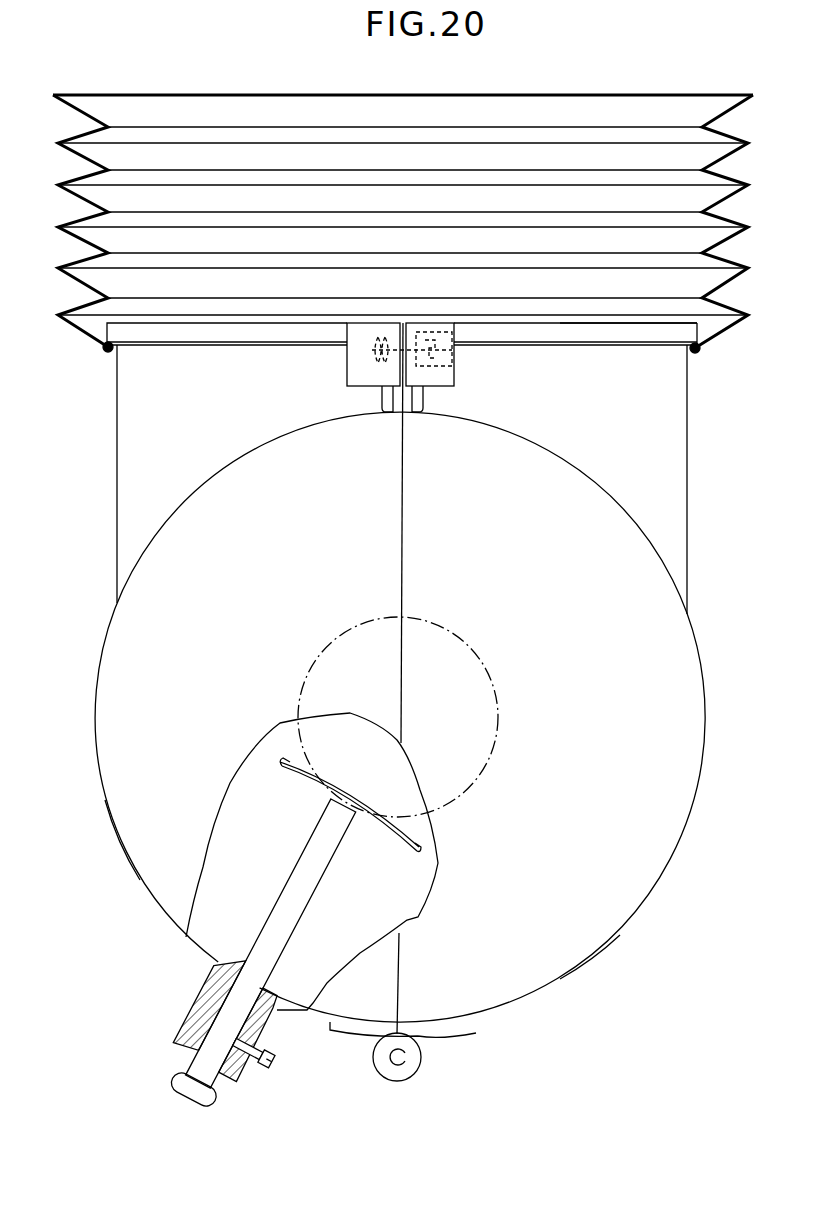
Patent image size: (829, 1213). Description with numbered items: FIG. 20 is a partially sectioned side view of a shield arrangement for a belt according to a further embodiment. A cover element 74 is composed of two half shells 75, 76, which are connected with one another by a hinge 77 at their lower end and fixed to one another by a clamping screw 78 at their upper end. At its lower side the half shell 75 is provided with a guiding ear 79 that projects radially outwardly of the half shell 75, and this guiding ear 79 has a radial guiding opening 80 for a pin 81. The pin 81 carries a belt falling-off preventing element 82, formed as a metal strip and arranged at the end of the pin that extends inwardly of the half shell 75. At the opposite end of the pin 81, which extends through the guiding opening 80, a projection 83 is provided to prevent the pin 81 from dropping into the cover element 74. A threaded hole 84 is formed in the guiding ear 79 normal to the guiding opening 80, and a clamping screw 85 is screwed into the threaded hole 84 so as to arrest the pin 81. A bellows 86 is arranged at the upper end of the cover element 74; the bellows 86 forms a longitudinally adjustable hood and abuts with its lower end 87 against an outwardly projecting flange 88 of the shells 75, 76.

The cover element 74 is at (652, 915).
The half shell 75 is at (126, 828).
The half shell 76 is at (583, 952).
The hinge 77 is at (410, 1063).
The clamping screw 78 is at (458, 362).
The guiding ear 79 is at (220, 983).
The guiding opening 80 is at (196, 1018).
The pin 81 is at (303, 880).
The belt falling-off preventing element 82 is at (293, 773).
The projection 83 is at (185, 1078).
The threaded hole 84 is at (262, 1037).
The clamping screw 85 is at (270, 1062).
The bellows 86 is at (195, 288).
The lower end 87 is at (104, 355).
The flange 88 is at (632, 333).